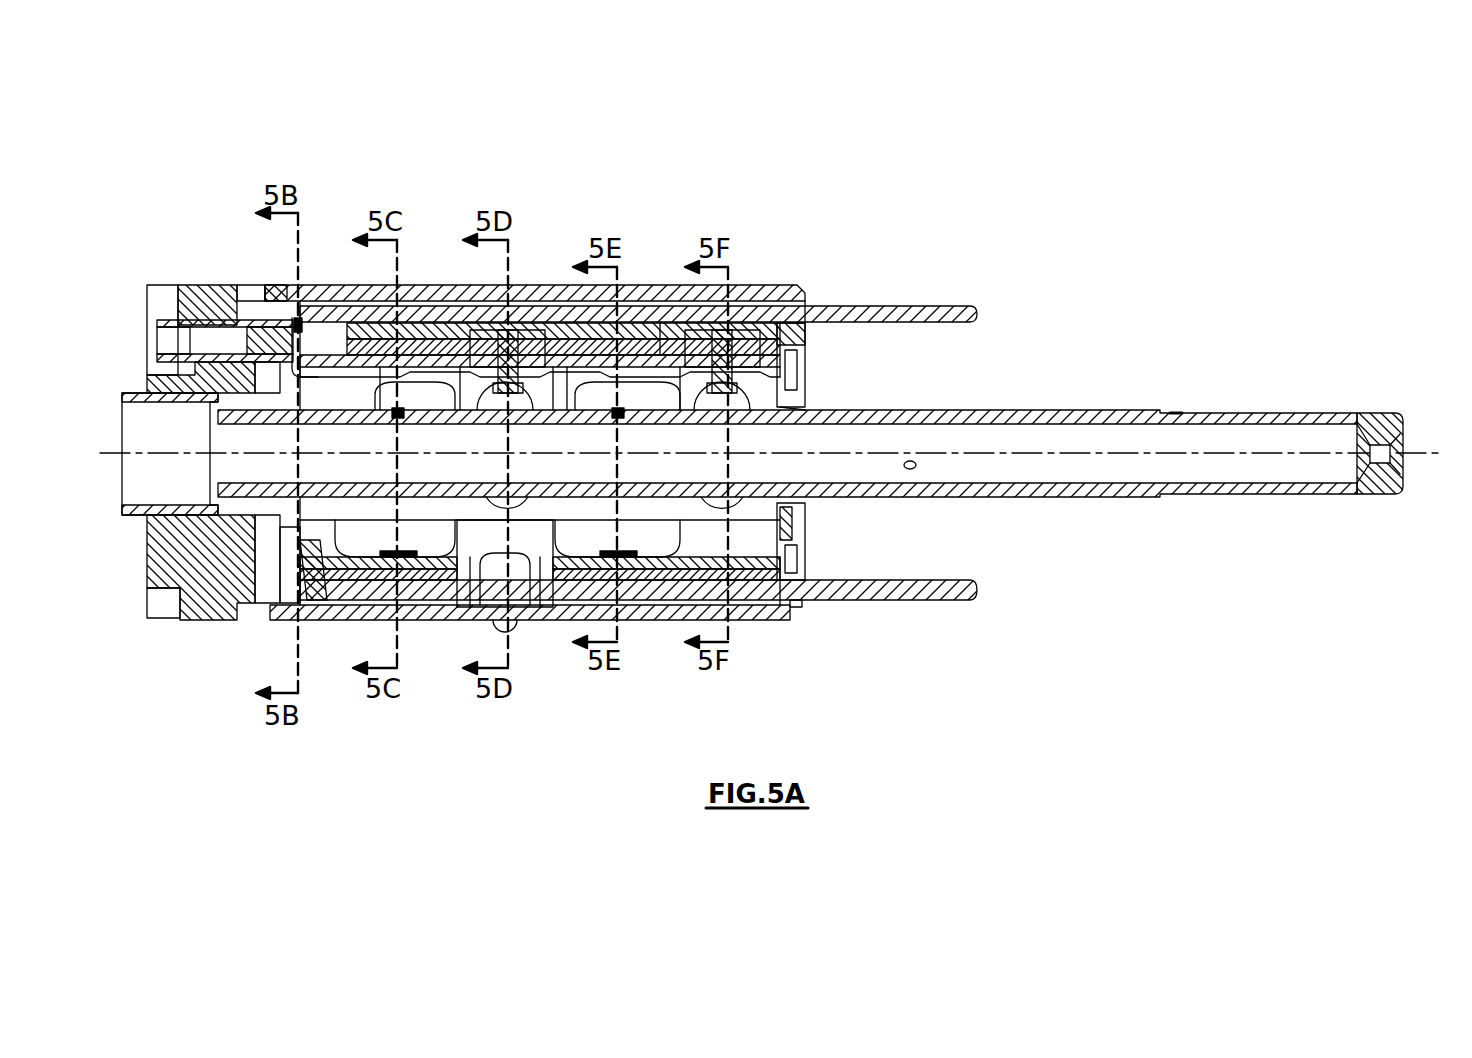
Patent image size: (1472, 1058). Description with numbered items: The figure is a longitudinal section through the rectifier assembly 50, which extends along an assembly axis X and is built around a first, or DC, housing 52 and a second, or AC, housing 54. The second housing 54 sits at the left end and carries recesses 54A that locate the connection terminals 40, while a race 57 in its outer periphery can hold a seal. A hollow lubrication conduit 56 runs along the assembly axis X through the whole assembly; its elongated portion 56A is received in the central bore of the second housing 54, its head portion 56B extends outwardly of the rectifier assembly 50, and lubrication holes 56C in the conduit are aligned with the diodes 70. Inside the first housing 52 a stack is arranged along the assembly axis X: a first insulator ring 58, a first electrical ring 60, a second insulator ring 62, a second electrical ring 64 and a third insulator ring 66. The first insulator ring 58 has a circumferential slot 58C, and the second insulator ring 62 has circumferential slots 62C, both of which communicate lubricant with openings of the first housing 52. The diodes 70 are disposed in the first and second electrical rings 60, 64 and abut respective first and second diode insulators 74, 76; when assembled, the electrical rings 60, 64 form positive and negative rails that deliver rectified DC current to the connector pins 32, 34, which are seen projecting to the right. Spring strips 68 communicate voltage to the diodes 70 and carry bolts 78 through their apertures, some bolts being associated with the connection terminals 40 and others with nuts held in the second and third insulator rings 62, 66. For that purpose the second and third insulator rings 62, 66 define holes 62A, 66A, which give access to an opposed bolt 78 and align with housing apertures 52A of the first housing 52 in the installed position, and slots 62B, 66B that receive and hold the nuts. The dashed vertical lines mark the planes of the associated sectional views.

The rectifier assembly 50 is at (158, 155).
The connector pin 32 is at (922, 600).
The connector pin 34 is at (942, 306).
The connection terminal 40 is at (220, 320).
The first housing 52 is at (775, 285).
The housing aperture 52A is at (730, 605).
The second housing 54 is at (186, 285).
The recess 54A is at (163, 297).
The lubrication conduit 56 is at (1003, 410).
The elongated portion 56A is at (1212, 413).
The head portion 56B is at (137, 393).
The lubrication hole 56C is at (412, 400).
The race 57 is at (265, 287).
The first insulator ring 58 is at (308, 608).
The circumferential slot 58C is at (336, 608).
The first electrical ring 60 is at (432, 605).
The second insulator ring 62 is at (535, 605).
The hole 62A is at (485, 550).
The slot 62B is at (528, 360).
The circumferential slot 62C is at (458, 605).
The second electrical ring 64 is at (646, 605).
The third insulator ring 66 is at (763, 605).
The hole 66A is at (748, 573).
The slot 66B is at (772, 352).
The spring strip 68 is at (322, 300).
The diode 70 is at (428, 330).
The first diode insulator 74 is at (442, 345).
The second diode insulator 76 is at (661, 330).
The bolt 78 is at (308, 300).
The assembly axis X is at (1427, 453).